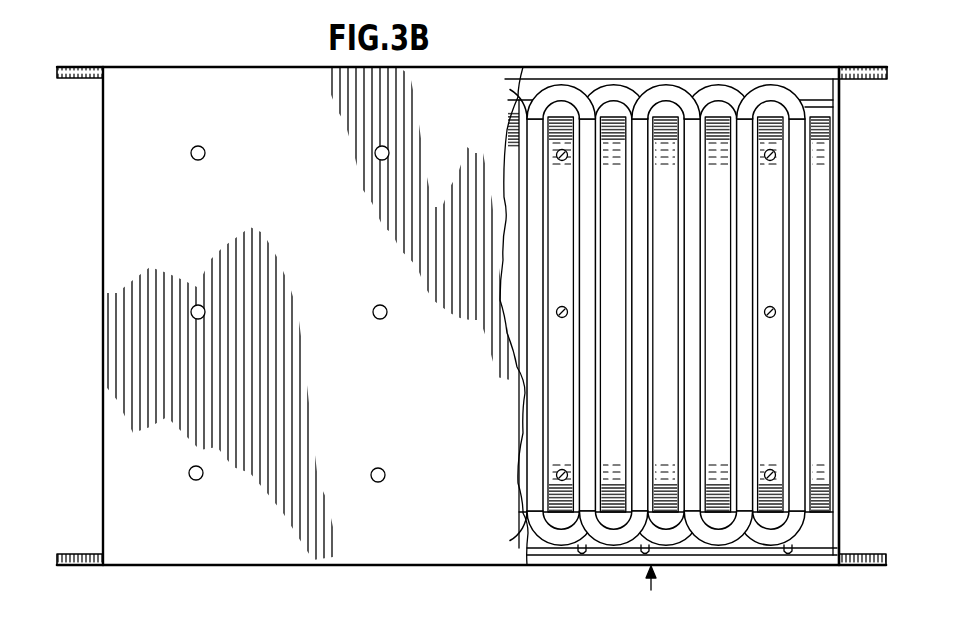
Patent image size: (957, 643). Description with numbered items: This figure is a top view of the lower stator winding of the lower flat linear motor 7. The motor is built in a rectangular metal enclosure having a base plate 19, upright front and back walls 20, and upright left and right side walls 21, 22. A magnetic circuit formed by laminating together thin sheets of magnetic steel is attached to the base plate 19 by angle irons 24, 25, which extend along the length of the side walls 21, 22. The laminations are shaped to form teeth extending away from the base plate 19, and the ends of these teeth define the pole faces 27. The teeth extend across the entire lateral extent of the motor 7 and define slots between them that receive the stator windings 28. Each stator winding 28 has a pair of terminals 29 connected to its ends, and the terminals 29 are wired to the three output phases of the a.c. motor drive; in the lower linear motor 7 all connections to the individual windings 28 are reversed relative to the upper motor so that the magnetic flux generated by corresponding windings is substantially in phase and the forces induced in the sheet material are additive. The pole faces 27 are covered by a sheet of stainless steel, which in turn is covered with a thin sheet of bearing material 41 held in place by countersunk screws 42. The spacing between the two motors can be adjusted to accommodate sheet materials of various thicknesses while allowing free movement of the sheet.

The lower flat linear motor 7 is at (651, 588).
The base plate 19 is at (823, 553).
The upright front and back walls 20 is at (101, 300).
The upright left side wall 21 is at (541, 560).
The upright right side wall 22 is at (608, 66).
The angle iron 24 is at (838, 518).
The angle iron 25 is at (825, 98).
The pole faces 27 is at (663, 132).
The stator windings 28 is at (758, 536).
The terminals 29 is at (645, 553).
The sheet of bearing material 41 is at (468, 419).
The countersunk screws 42 is at (377, 159).